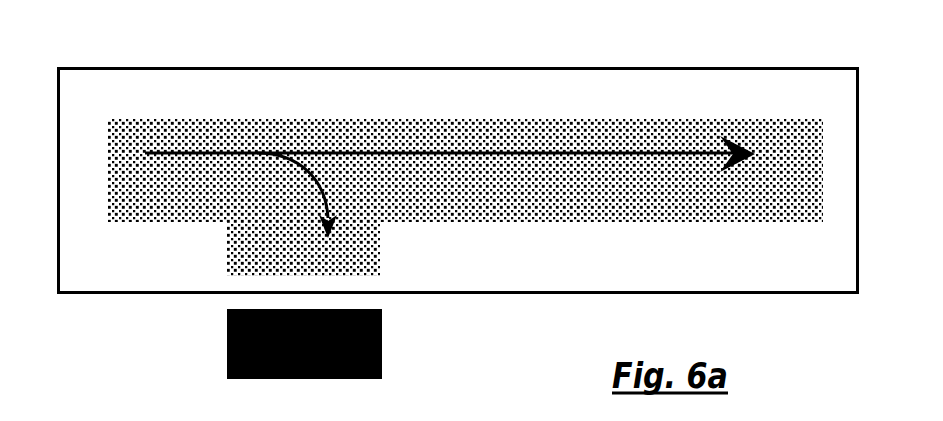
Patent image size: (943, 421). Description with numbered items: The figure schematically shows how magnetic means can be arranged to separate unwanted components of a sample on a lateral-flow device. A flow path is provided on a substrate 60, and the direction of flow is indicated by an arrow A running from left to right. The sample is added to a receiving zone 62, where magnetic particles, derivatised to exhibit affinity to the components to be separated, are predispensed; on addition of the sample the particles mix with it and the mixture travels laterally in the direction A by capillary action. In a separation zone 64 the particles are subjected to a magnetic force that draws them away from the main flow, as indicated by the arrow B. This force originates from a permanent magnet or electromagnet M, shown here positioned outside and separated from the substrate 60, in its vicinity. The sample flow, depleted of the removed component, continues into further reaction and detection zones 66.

The substrate 60 is at (144, 293).
The receiving zone 62 is at (213, 118).
The separation zone 64 is at (331, 118).
The reaction and detection zones 66 is at (587, 118).
The arrow indicating direction of flow A is at (461, 171).
The arrow indicating magnetic drawing of particles B is at (297, 205).
The magnet M is at (333, 378).